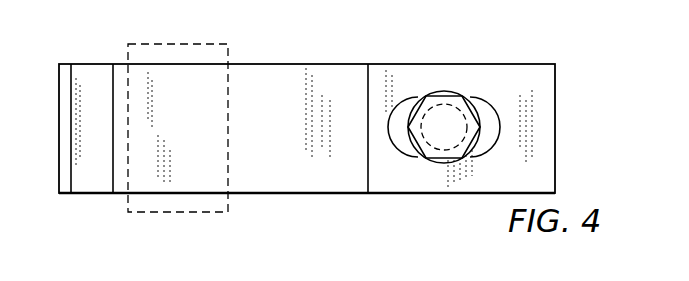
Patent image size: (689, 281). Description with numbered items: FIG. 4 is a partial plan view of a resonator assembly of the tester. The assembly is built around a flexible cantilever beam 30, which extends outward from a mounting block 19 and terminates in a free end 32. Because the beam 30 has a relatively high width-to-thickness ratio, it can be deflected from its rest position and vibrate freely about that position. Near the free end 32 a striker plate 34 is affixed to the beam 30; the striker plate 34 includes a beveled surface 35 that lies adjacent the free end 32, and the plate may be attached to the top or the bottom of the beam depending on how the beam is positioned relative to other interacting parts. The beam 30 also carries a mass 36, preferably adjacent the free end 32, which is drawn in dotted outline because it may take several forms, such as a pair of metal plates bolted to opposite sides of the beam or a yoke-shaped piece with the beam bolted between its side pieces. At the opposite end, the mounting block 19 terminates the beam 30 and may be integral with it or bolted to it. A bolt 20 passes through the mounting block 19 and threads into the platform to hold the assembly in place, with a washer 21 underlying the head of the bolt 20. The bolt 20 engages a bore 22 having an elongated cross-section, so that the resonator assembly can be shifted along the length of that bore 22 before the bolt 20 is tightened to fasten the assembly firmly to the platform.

The mounting block 19 is at (532, 63).
The bolt 20 is at (443, 110).
The washer 21 is at (421, 98).
The bore 22 is at (497, 124).
The flexible cantilever beam 30 is at (290, 72).
The free end 32 is at (59, 85).
The striker plate 34 is at (97, 76).
The beveled surface 35 is at (63, 138).
The mass 36 is at (210, 22).